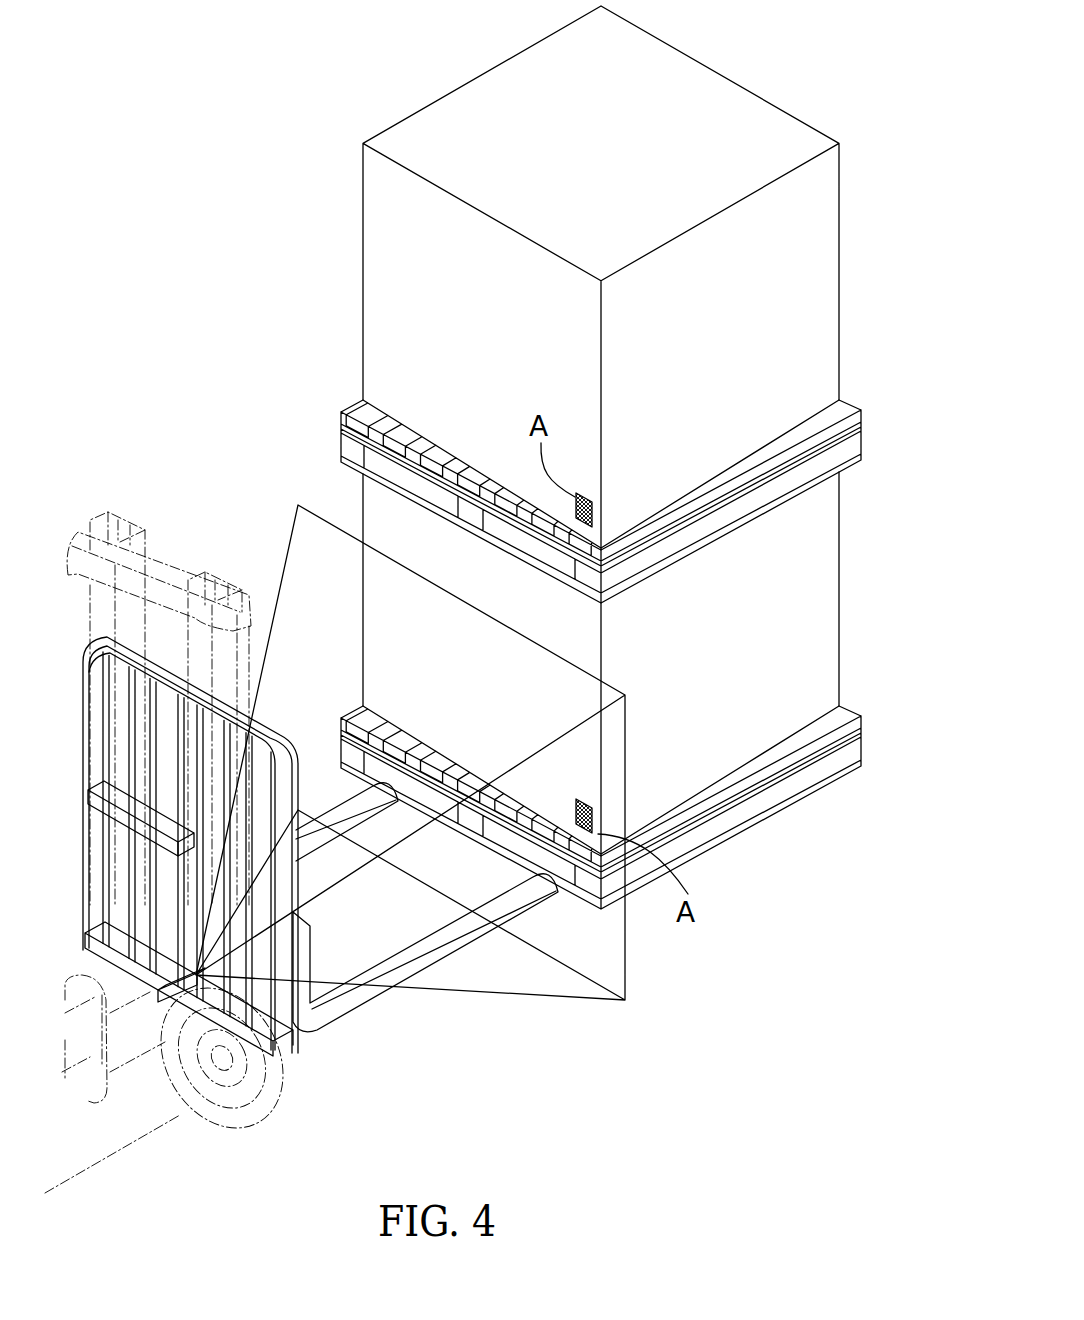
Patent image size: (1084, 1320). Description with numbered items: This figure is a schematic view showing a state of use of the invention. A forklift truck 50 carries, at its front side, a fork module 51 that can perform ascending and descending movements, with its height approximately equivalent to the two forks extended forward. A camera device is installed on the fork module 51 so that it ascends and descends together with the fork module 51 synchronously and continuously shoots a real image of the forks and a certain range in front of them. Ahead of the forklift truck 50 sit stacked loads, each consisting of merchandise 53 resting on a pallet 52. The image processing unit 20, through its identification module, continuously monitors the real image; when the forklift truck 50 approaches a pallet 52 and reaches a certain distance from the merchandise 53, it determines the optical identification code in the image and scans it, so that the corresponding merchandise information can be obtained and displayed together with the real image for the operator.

The merchandise 53 is at (845, 291).
The pallet 52 is at (862, 434).
The fork module 51 is at (340, 1025).
The image processing unit 20 is at (195, 983).
The forklift truck 50 is at (110, 1150).